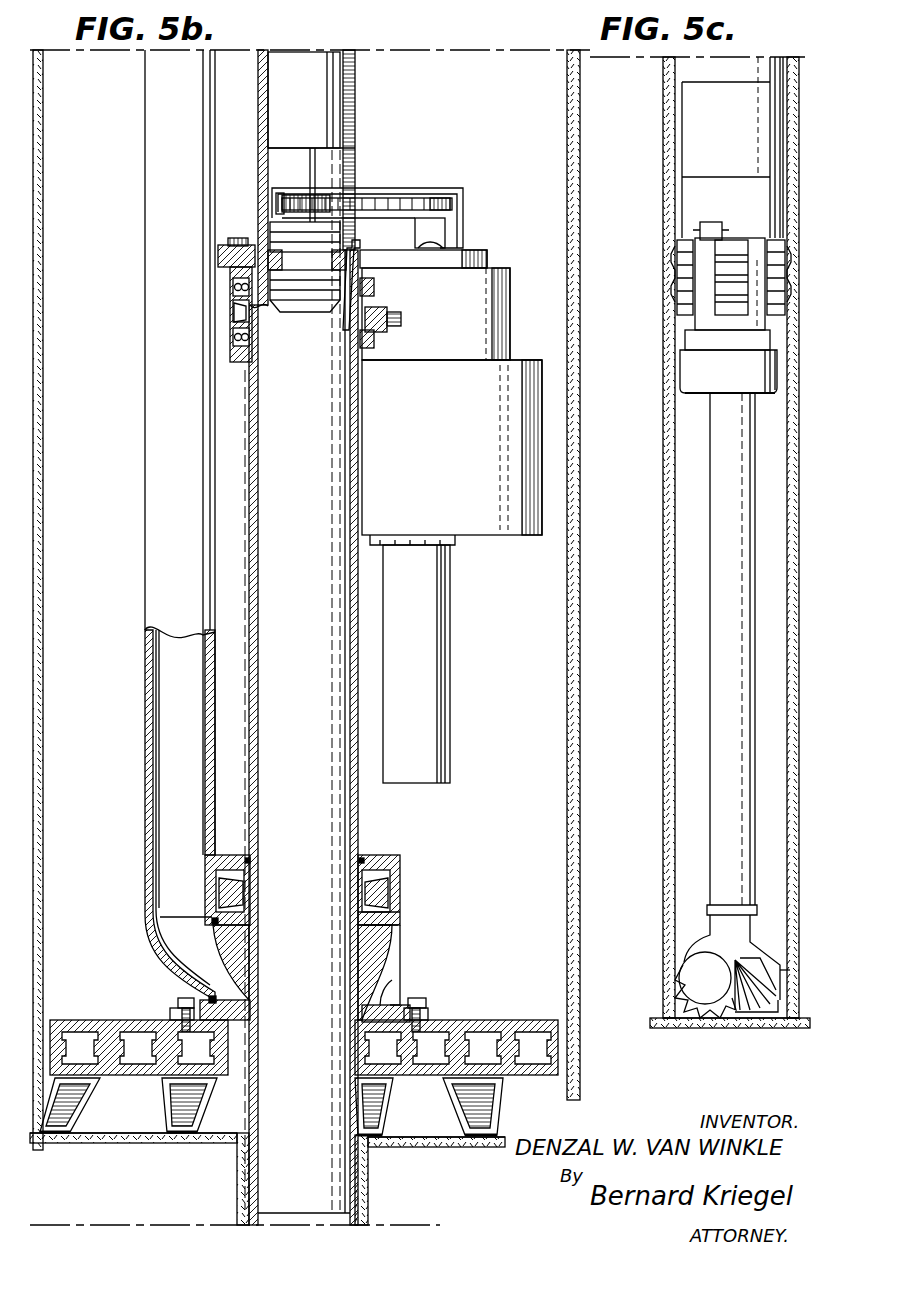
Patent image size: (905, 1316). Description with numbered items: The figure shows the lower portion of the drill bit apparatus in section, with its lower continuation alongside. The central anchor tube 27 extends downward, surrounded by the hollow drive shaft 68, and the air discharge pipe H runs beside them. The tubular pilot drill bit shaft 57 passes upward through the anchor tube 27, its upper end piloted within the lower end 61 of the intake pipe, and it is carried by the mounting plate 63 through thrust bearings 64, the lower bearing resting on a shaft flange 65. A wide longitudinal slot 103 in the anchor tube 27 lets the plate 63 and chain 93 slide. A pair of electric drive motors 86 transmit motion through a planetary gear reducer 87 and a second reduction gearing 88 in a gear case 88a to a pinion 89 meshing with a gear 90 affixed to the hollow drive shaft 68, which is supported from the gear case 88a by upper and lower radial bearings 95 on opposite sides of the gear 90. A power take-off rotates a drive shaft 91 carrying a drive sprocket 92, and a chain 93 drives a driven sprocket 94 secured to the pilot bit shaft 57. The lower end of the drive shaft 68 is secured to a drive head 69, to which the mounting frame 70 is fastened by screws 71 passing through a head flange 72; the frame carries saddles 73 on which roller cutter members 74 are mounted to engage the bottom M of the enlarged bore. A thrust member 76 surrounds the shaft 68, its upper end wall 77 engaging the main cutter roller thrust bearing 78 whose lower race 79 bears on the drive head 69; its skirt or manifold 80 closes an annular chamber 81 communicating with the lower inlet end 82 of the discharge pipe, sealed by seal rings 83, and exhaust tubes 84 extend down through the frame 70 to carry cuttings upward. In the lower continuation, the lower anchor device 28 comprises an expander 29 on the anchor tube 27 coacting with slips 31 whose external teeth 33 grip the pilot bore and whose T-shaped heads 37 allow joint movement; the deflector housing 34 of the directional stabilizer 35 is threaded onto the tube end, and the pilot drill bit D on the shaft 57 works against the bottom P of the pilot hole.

In FIG. 5b, the central anchor tube 27 is at (303, 737).
In FIG. 5c, the lower anchor device 28 is at (804, 259).
In FIG. 5c, the expander 29 is at (712, 300).
In FIG. 5c, the slips 31 is at (722, 285).
In FIG. 5c, the external teeth 33 is at (788, 293).
In FIG. 5c, the deflector housing 34 is at (705, 378).
In FIG. 5c, the directional stabilizer 35 is at (698, 406).
In FIG. 5c, the T-shaped heads 37 is at (697, 236).
In FIG. 5b, the pilot drill bit shaft 57 is at (275, 325).
In FIG. 5c, the pilot drill bit shaft 57 is at (740, 628).
In FIG. 5b, the lower end of intake pipe 61 is at (318, 103).
In FIG. 5b, the mounting plate 63 is at (490, 255).
In FIG. 5b, the thrust bearings 64 is at (335, 234).
In FIG. 5b, the shaft flange 65 is at (312, 318).
In FIG. 5b, the hollow drive shaft 68 is at (250, 515).
In FIG. 5b, the drive head 69 is at (372, 928).
In FIG. 5b, the mounting frame 70 is at (510, 1030).
In FIG. 5b, the screws 71 is at (180, 1003).
In FIG. 5b, the head flange 72 is at (175, 1015).
In FIG. 5b, the saddles 73 is at (82, 1108).
In FIG. 5b, the roller cutter members 74 is at (55, 1133).
In FIG. 5b, the thrust member 76 is at (405, 853).
In FIG. 5b, the upper end wall 77 is at (228, 858).
In FIG. 5b, the main cutter roller thrust bearing 78 is at (403, 882).
In FIG. 5b, the lower race 79 is at (400, 908).
In FIG. 5b, the skirt or manifold 80 is at (400, 951).
In FIG. 5b, the annular chamber 81 is at (378, 985).
In FIG. 5b, the lower inlet end of air discharge pipe 82 is at (222, 962).
In FIG. 5b, the seal rings 83 is at (200, 923).
In FIG. 5b, the exhaust tubes 84 is at (220, 1135).
In FIG. 5b, the electric drive motors 86 is at (428, 736).
In FIG. 5b, the planetary gear reducer 87 is at (495, 505).
In FIG. 5b, the second reduction gearing 88 is at (470, 347).
In FIG. 5b, the gear case 88a is at (478, 296).
In FIG. 5b, the pinion 89 is at (390, 317).
In FIG. 5b, the gear 90 is at (240, 312).
In FIG. 5b, the drive shaft 91 is at (440, 230).
In FIG. 5b, the drive sprocket 92 is at (430, 196).
In FIG. 5b, the chain 93 is at (368, 200).
In FIG. 5b, the driven sprocket 94 is at (300, 202).
In FIG. 5b, the radial bearings 95 is at (245, 286).
In FIG. 5b, the longitudinal slot 103 is at (345, 146).
In FIG. 5b, the air discharge pipe H is at (168, 582).
In FIG. 5b, the bottom of enlarged bore M is at (88, 1138).
In FIG. 5c, the pilot drill bit D is at (735, 940).
In FIG. 5c, the bottom of pilot hole P is at (690, 1020).